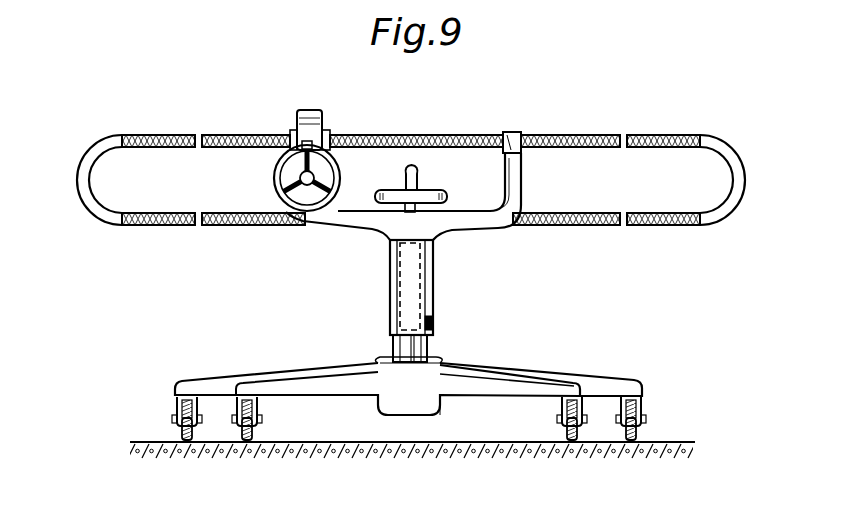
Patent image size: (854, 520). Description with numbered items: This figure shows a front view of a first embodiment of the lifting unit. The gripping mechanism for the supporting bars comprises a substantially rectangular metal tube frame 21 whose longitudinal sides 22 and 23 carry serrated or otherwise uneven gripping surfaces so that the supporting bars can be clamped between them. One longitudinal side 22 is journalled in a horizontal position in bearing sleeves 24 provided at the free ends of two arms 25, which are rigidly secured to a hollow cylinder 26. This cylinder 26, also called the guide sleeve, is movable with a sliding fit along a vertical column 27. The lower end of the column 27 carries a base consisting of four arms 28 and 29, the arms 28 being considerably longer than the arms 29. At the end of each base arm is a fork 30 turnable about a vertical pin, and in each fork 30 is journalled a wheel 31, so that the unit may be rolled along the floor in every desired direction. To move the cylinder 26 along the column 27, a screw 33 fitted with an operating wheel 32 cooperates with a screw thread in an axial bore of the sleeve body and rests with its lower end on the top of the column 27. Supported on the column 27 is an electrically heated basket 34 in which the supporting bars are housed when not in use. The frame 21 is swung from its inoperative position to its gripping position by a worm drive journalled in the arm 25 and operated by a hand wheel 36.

The metal tube frame 21 is at (411, 178).
The longitudinal side 22 is at (586, 137).
The longitudinal side 23 is at (578, 227).
The bearing sleeve 24 is at (324, 136).
The arm 25 is at (513, 182).
The hollow cylinder 26 is at (390, 257).
The vertical column 27 is at (406, 342).
The arm 28 is at (198, 388).
The arm 29 is at (268, 390).
The fork 30 is at (174, 405).
The wheel 31 is at (197, 427).
The operating wheel 32 is at (448, 198).
The screw 33 is at (417, 205).
The electrically heated basket 34 is at (408, 285).
The hand wheel 36 is at (288, 188).